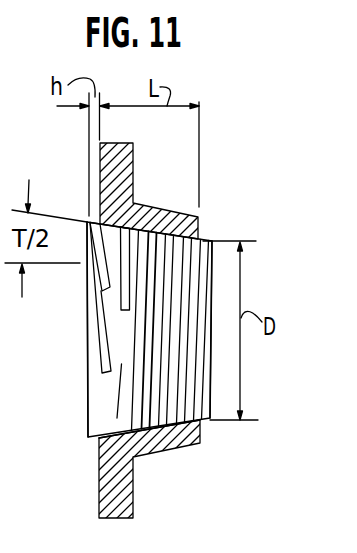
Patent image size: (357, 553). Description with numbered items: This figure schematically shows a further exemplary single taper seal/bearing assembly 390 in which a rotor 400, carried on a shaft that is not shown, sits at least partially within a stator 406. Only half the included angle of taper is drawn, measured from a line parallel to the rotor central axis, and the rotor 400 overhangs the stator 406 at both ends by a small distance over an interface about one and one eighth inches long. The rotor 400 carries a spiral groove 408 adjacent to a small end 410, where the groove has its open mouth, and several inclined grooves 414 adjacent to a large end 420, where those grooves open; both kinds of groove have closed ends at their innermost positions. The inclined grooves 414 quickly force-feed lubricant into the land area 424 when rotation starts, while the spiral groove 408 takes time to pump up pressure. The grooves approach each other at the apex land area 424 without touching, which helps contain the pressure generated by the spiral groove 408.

The seal/bearing assembly 390 is at (214, 197).
The rotor 400 is at (186, 403).
The stator 406 is at (134, 488).
The spiral groove 408 is at (198, 257).
The small end 410 is at (211, 388).
The inclined grooves 414 is at (81, 420).
The large end 420 is at (88, 331).
The land area 424 is at (101, 459).